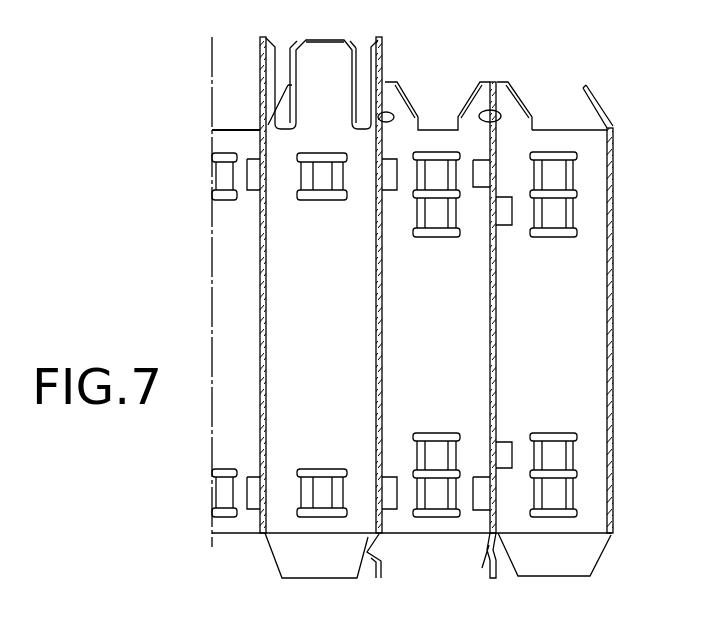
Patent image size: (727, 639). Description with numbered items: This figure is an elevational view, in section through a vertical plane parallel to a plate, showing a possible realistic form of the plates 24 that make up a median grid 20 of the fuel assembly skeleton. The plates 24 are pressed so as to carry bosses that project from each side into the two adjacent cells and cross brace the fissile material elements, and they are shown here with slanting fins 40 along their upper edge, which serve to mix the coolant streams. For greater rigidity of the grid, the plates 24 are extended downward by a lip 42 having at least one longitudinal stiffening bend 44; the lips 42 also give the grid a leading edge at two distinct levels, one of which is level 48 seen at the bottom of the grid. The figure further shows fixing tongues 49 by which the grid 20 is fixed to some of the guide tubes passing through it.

The median grid 20 is at (620, 334).
The plate 24 is at (586, 289).
The slanting fin 40 is at (477, 104).
The lip 42 is at (492, 578).
The longitudinal stiffening bend 44 is at (486, 556).
The leading edge level 48 is at (537, 565).
The fixing tongue 49 is at (322, 55).